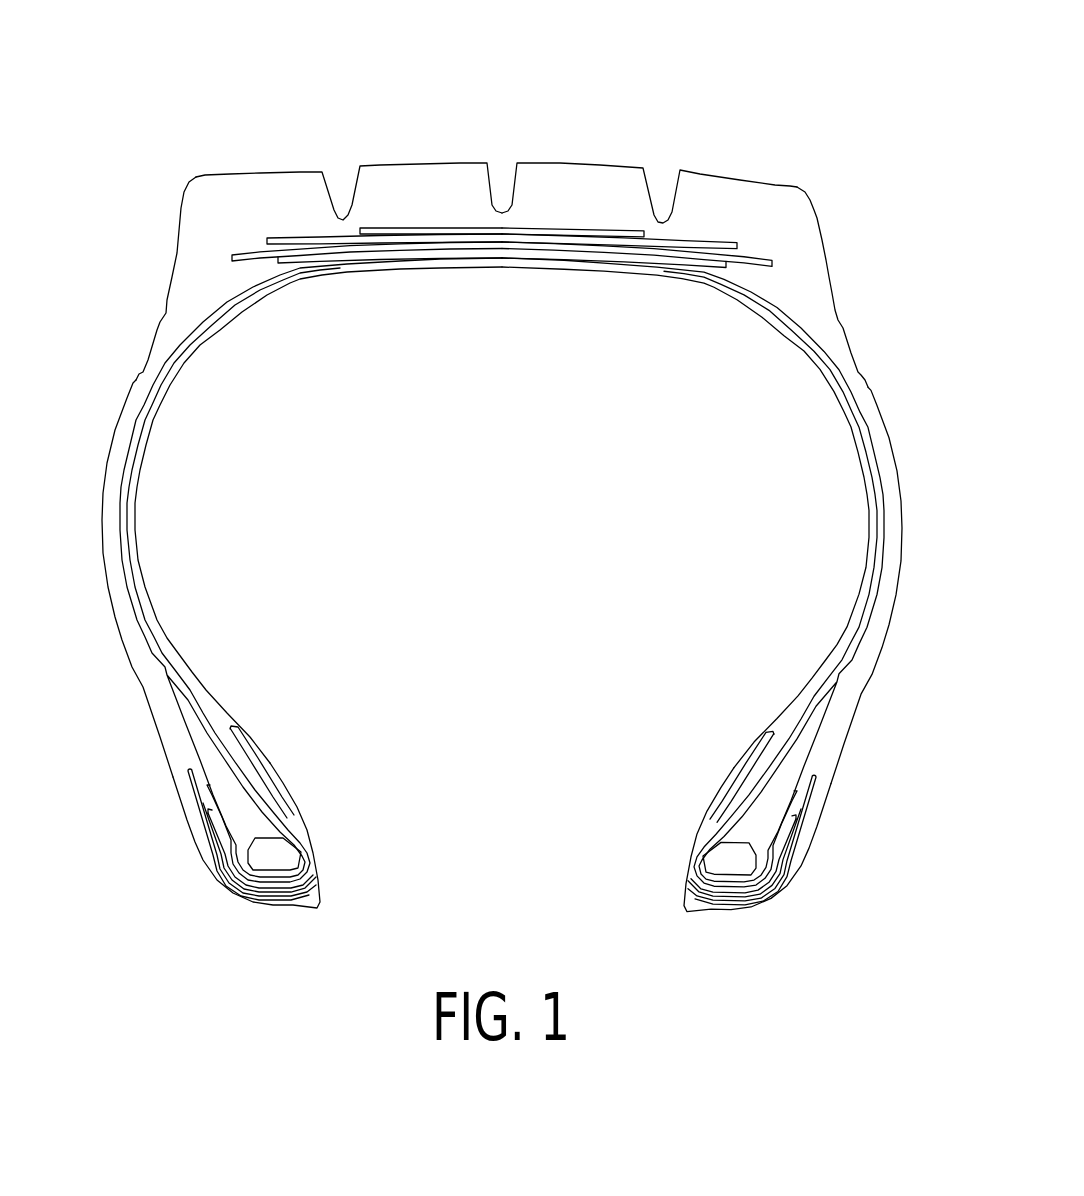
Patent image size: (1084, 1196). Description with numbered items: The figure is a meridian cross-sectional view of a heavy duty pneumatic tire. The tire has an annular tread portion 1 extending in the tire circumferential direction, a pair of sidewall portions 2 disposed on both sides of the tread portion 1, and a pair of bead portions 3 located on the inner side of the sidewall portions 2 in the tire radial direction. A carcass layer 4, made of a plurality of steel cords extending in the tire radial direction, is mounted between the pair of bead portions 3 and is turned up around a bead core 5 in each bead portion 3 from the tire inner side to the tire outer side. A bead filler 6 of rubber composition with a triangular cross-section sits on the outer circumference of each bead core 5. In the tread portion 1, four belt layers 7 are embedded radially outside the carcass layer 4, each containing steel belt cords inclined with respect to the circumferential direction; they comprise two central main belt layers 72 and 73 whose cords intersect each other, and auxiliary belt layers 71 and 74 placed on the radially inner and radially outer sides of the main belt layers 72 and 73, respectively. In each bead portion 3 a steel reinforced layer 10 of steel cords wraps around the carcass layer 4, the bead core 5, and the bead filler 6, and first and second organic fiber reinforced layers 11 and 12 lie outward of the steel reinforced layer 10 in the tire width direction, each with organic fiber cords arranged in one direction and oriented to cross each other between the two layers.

The tread portion 1 is at (571, 162).
The sidewall portion 2 is at (118, 400).
The bead portion 3 is at (195, 858).
The carcass layer 4 is at (793, 320).
The bead core 5 is at (277, 850).
The bead filler 6 is at (230, 770).
The belt layers 7 is at (487, 139).
The auxiliary belt layer 71 is at (383, 247).
The main belt layer 72 is at (257, 253).
The main belt layer 73 is at (323, 240).
The auxiliary belt layer 74 is at (418, 227).
The steel reinforced layer 10 is at (760, 745).
The first organic fiber reinforced layer 11 is at (817, 785).
The second organic fiber reinforced layer 12 is at (790, 850).